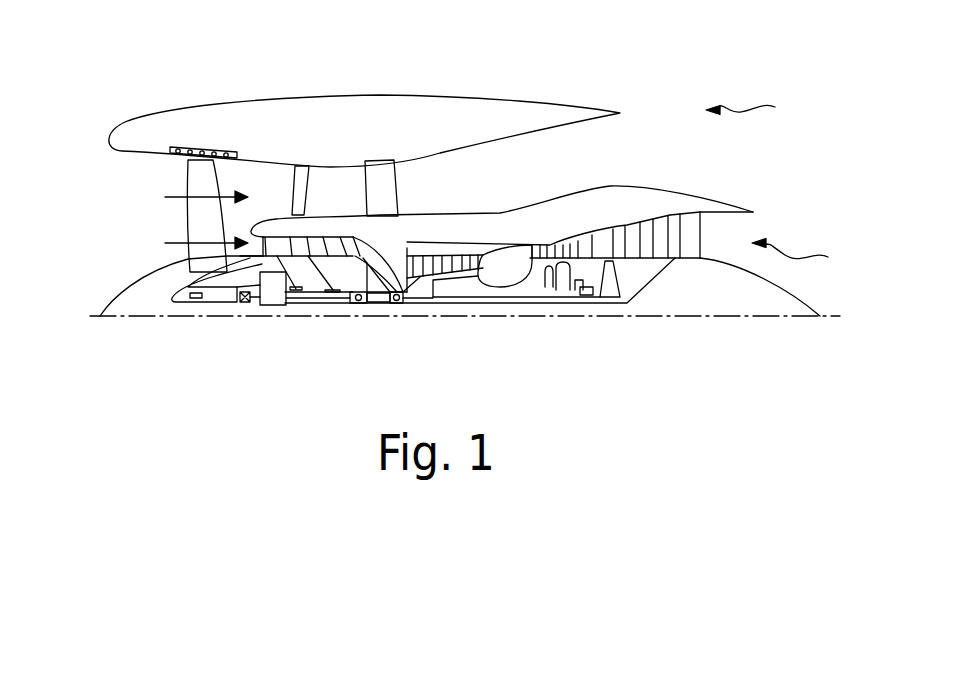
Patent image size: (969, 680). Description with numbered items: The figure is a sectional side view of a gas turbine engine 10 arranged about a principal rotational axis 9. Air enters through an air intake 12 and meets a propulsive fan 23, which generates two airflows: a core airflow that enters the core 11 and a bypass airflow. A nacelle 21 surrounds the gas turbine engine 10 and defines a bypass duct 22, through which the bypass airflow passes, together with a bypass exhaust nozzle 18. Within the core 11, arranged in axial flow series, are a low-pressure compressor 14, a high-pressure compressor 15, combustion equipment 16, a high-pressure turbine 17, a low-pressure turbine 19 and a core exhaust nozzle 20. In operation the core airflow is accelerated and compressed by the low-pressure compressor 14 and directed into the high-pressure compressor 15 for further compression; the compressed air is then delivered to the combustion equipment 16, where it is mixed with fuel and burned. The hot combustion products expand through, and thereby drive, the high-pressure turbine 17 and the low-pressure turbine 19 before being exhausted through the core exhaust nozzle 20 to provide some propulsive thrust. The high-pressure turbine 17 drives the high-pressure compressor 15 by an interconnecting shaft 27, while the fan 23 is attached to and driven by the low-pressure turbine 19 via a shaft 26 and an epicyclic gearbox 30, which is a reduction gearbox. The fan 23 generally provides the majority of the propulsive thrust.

The principal rotational axis 9 is at (723, 318).
The gas turbine engine 10 is at (154, 105).
The core 11 is at (496, 272).
The air intake 12 is at (147, 218).
The low-pressure compressor 14 is at (326, 226).
The high-pressure compressor 15 is at (452, 260).
The combustion equipment 16 is at (510, 265).
The high-pressure turbine 17 is at (563, 248).
The bypass exhaust nozzle 18 is at (757, 107).
The low-pressure turbine 19 is at (680, 248).
The core exhaust nozzle 20 is at (807, 257).
The nacelle 21 is at (377, 109).
The bypass duct 22 is at (586, 151).
The propulsive fan 23 is at (193, 230).
The shaft 26 is at (420, 308).
The interconnecting shaft 27 is at (477, 297).
The epicyclic gearbox 30 is at (272, 300).